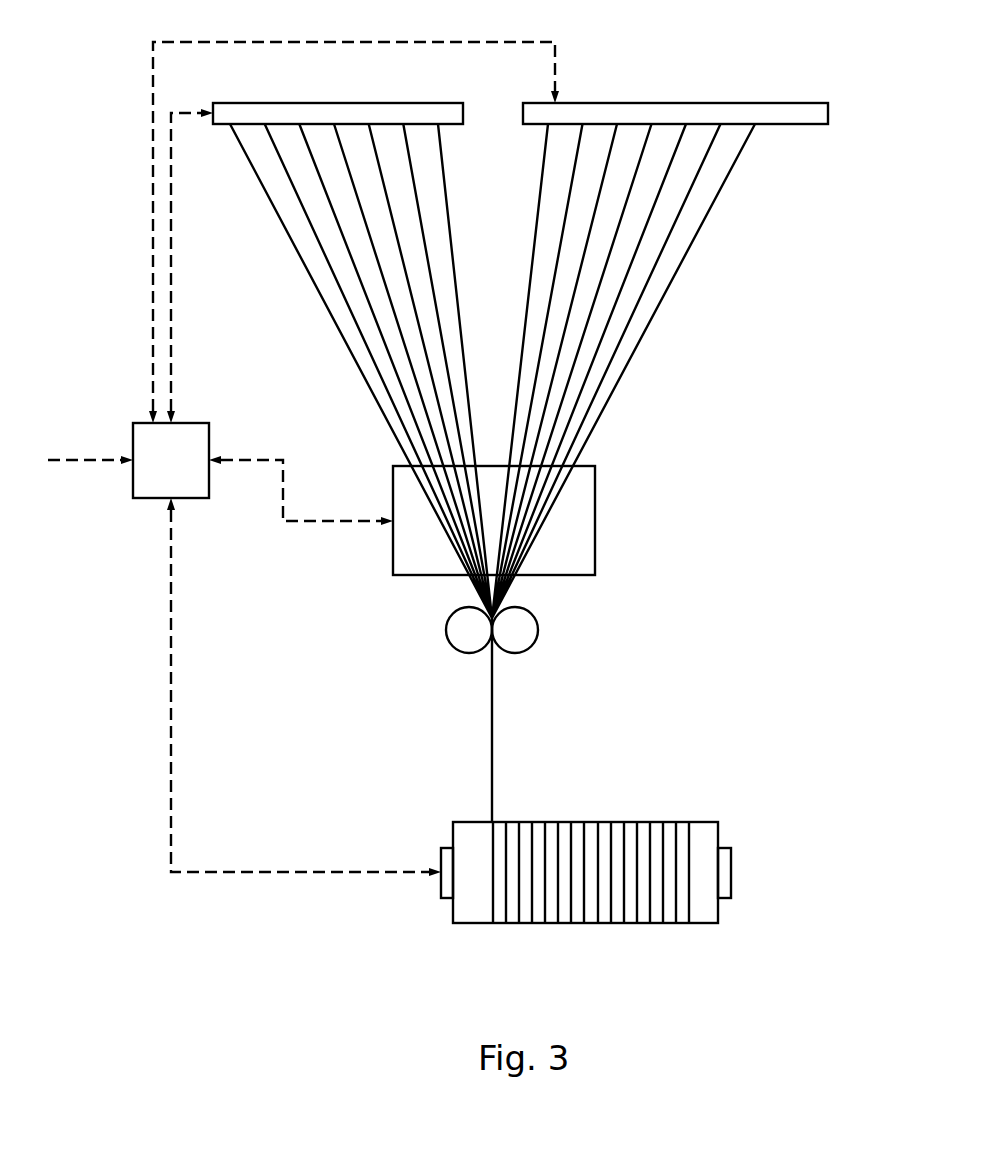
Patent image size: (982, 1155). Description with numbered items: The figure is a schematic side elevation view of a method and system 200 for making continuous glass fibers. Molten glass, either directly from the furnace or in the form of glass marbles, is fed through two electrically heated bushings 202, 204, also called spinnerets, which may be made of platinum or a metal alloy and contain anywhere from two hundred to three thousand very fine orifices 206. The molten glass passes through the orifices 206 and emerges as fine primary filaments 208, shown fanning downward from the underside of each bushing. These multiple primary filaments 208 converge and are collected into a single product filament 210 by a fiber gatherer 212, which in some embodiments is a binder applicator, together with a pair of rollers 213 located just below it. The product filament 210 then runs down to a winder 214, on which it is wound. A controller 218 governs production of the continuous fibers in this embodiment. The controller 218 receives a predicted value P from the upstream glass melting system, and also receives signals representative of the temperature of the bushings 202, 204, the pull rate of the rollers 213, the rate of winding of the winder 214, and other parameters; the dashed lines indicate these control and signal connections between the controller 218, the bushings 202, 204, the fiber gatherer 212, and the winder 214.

The method and system of making continuous fibers 200 is at (776, 331).
The bushing 202 is at (345, 102).
The bushing 204 is at (807, 113).
The orifices 206 is at (438, 126).
The filaments 208 is at (362, 342).
The product filament 210 is at (493, 702).
The fiber gatherer 212 is at (595, 535).
The rollers 213 is at (538, 632).
The winder 214 is at (703, 822).
The controller 218 is at (152, 498).
The predicted value P is at (83, 460).